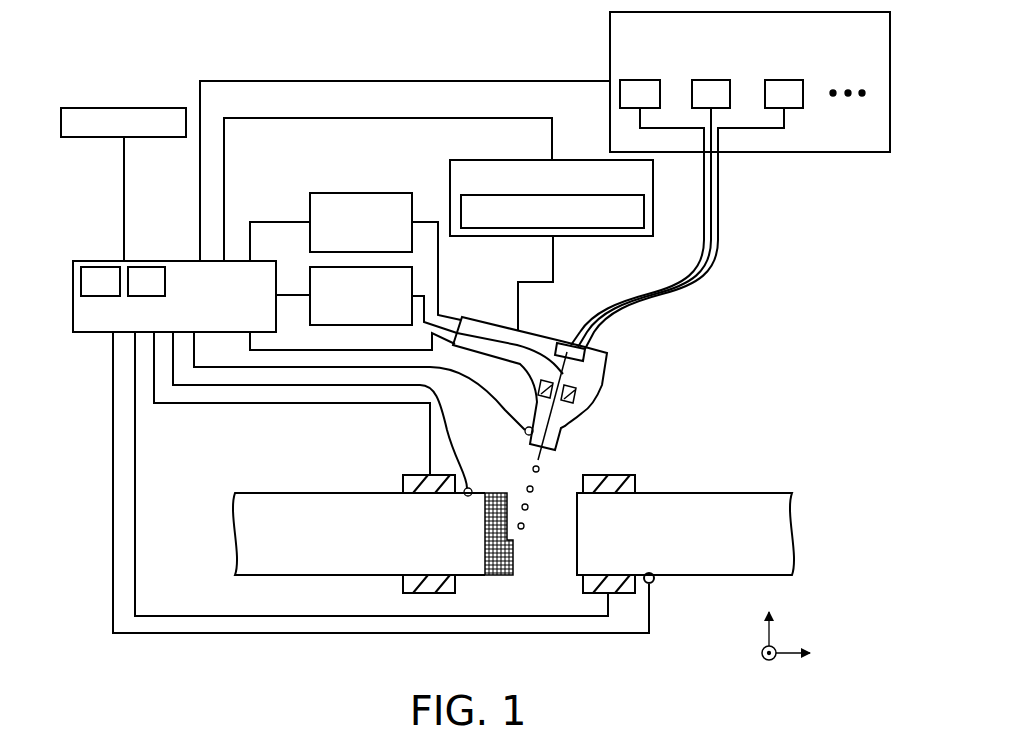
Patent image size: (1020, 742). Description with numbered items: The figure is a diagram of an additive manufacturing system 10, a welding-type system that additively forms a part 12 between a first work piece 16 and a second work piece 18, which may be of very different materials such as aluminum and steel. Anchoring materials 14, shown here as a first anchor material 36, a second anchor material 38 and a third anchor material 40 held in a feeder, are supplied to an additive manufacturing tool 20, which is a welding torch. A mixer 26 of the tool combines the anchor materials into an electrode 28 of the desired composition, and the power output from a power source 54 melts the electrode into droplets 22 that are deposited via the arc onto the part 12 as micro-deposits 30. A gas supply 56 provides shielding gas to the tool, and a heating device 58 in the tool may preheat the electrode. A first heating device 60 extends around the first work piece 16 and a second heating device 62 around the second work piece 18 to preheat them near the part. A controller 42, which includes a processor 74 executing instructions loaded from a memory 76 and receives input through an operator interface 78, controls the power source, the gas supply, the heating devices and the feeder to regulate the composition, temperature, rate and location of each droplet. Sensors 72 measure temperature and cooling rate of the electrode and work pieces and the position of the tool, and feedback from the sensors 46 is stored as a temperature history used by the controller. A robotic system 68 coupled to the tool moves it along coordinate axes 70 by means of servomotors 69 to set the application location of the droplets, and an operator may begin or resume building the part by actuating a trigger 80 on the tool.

The additive manufacturing system 10 is at (333, 77).
The part 12 is at (514, 594).
The anchoring materials 14 is at (814, 70).
The first work piece 16 is at (359, 534).
The second work piece 18 is at (685, 534).
The additive manufacturing tool 20 is at (618, 342).
The droplets 22 is at (540, 469).
The mixer 26 is at (548, 340).
The electrode 28 is at (576, 374).
The micro-deposits 30 is at (513, 572).
The first anchor material 36 is at (640, 80).
The second anchor material 38 is at (710, 80).
The third anchor material 40 is at (783, 80).
The controller 42 is at (100, 333).
The sensors 46 is at (654, 584).
The power source 54 is at (308, 280).
The gas supply 56 is at (358, 193).
The heating device 58 is at (577, 395).
The first heating device 60 is at (403, 478).
The second heating device 62 is at (633, 475).
The robotic system 68 is at (575, 159).
The servomotors 69 is at (644, 212).
The coordinate axes 70 is at (792, 669).
The sensors 72 is at (525, 432).
The processor 74 is at (98, 267).
The memory 76 is at (149, 267).
The operator interface 78 is at (124, 108).
The trigger 80 is at (472, 367).